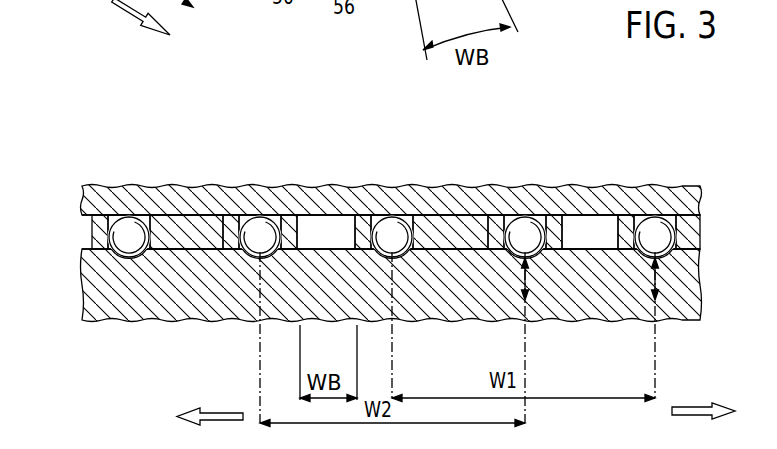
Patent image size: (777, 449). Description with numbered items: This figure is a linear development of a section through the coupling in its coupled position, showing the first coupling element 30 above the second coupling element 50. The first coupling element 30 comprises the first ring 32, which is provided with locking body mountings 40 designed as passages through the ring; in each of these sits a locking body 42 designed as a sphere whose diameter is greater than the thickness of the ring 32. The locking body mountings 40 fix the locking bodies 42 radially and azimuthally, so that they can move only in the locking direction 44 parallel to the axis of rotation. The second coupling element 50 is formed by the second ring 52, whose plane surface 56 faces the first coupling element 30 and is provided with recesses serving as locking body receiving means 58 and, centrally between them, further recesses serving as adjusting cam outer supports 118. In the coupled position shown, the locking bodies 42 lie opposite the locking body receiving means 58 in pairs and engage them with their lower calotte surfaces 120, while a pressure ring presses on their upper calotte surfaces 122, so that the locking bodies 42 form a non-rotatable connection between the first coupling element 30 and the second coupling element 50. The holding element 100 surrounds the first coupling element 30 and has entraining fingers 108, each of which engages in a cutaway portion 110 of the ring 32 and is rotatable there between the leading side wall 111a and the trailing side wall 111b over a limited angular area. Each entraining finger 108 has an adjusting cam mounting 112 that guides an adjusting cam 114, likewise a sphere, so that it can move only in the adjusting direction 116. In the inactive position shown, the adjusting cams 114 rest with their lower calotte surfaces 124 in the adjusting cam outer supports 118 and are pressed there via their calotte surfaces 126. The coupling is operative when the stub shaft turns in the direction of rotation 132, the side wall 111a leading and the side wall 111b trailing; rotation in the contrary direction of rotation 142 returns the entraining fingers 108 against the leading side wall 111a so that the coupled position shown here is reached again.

The first coupling element 30 is at (82, 192).
The first ring 32 is at (172, 224).
The locking body mounting 40 is at (108, 238).
The locking body 42 is at (84, 218).
The locking direction 44 is at (655, 282).
The second coupling element 50 is at (80, 285).
The second ring 52 is at (683, 308).
The plane surface 56 is at (482, 253).
The locking body receiving means 58 is at (677, 246).
The holding element 100 is at (573, 222).
The entraining finger 108 is at (290, 224).
The cutaway portion 110 is at (620, 253).
The leading side wall 111a is at (228, 253).
The trailing side wall 111b is at (342, 253).
The adjusting cam mounting 112 is at (252, 218).
The adjusting cam 114 is at (228, 216).
The adjusting direction 116 is at (522, 302).
The adjusting cam outer support 118 is at (255, 258).
The lower calotte surface 120 is at (118, 256).
The upper calotte surface 122 is at (122, 217).
The lower calotte surface of adjusting cam 124 is at (530, 258).
The calotte surface of adjusting cam 126 is at (540, 212).
The direction of rotation 132 is at (220, 412).
The direction of rotation 142 is at (693, 405).